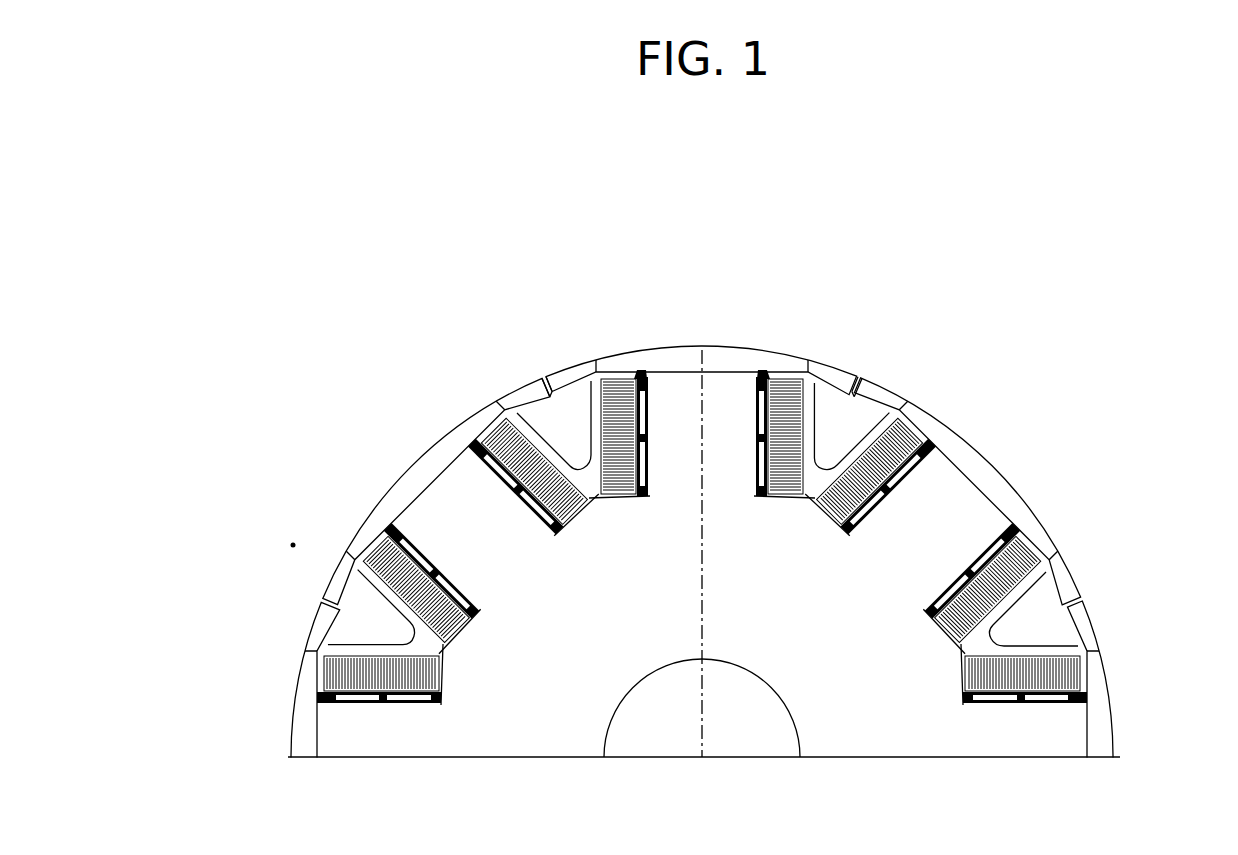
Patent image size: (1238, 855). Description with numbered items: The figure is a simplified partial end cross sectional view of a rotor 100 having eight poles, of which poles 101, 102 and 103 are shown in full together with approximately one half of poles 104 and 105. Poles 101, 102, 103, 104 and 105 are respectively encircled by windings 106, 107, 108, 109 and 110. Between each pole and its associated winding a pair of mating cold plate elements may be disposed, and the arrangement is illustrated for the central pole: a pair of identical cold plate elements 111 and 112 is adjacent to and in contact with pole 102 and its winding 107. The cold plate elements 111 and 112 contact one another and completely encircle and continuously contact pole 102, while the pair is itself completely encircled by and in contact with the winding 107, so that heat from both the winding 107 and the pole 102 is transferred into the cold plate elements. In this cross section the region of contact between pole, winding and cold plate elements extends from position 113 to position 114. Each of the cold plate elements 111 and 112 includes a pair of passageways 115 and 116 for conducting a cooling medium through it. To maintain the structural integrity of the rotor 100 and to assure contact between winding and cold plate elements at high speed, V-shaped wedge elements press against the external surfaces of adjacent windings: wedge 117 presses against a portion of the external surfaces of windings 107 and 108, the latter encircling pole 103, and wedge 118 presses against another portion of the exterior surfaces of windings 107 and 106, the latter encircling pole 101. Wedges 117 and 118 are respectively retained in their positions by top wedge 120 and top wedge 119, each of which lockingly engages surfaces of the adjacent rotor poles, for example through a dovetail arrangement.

The rotor 100 is at (723, 154).
The pole 101 is at (404, 460).
The pole 102 is at (703, 333).
The pole 103 is at (1006, 466).
The pole 104 is at (1122, 742).
The pole 105 is at (281, 739).
The winding 106 is at (530, 463).
The winding 107 is at (620, 420).
The winding 108 is at (880, 463).
The winding 109 is at (1025, 675).
The winding 110 is at (380, 672).
The cold plate element 111 is at (633, 363).
The cold plate element 112 is at (771, 363).
The position 113 is at (747, 493).
The position 114 is at (747, 382).
The passageway 115 is at (747, 451).
The passageway 116 is at (747, 420).
The wedge 117 is at (823, 419).
The wedge 118 is at (581, 417).
The top wedge 119 is at (548, 375).
The top wedge 120 is at (856, 375).